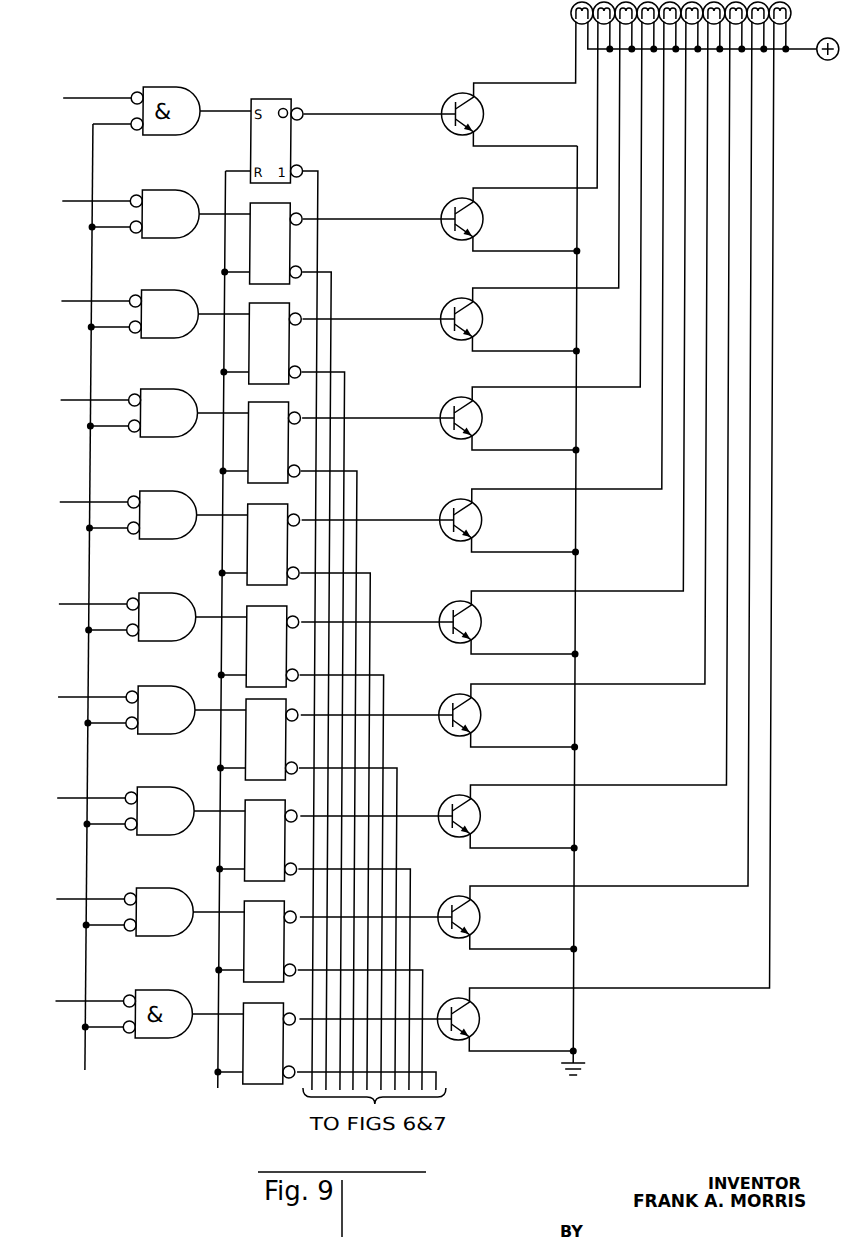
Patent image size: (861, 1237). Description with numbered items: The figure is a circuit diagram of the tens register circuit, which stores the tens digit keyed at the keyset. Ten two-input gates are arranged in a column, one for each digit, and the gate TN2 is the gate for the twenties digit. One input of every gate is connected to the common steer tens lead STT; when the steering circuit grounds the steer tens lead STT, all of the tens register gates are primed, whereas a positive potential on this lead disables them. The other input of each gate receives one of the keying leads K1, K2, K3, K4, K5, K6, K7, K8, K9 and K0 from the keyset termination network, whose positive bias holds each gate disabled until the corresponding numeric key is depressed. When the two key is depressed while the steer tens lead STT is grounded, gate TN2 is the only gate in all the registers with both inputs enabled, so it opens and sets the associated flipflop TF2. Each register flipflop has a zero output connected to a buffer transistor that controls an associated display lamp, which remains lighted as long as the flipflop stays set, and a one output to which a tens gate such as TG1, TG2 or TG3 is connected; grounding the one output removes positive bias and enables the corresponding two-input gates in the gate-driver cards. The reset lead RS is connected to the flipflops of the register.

The keying lead K1 is at (83, 100).
The keying lead K2 is at (83, 203).
The keying lead K3 is at (83, 303).
The keying lead K4 is at (83, 402).
The keying lead K5 is at (83, 504).
The keying lead K6 is at (83, 606).
The keying lead K7 is at (83, 699).
The keying lead K8 is at (83, 800).
The keying lead K9 is at (83, 901).
The keying lead K0 is at (83, 1003).
The tens register gate TN2 is at (192, 171).
The tens gate TG1 is at (319, 203).
The tens register flipflop TF2 is at (284, 257).
The tens gate TG2 is at (334, 299).
The tens gate TG3 is at (342, 395).
The steer tens lead STT is at (86, 1070).
The reset line RS is at (225, 1086).